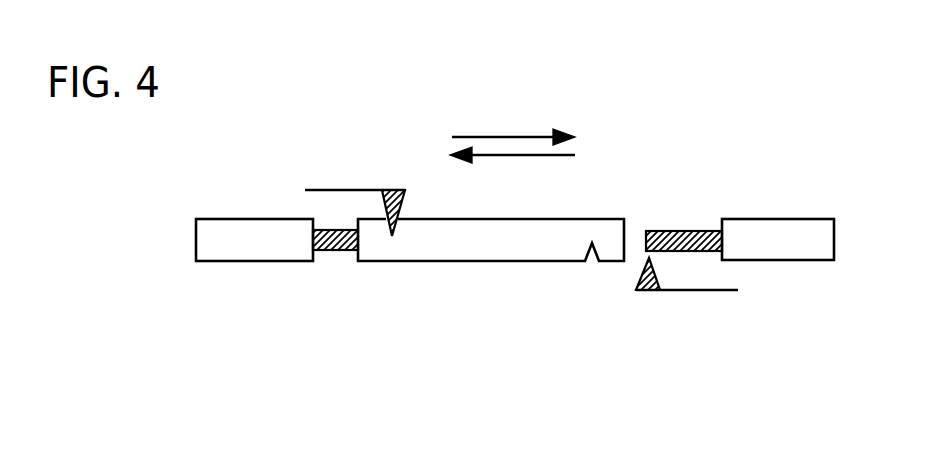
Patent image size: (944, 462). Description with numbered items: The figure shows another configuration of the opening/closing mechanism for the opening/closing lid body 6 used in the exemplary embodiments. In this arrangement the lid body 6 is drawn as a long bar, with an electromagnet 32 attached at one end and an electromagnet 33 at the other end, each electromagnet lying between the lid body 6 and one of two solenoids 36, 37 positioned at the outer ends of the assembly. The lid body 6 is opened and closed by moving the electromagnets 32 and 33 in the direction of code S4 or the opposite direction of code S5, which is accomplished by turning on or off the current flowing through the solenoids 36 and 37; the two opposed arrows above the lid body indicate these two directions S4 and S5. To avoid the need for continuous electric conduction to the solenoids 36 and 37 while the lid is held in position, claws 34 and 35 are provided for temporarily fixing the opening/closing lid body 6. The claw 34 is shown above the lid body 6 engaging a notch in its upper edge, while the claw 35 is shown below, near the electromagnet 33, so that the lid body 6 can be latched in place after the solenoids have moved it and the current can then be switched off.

The opening/closing lid body 6 is at (465, 250).
The electromagnet 32 is at (330, 251).
The electromagnet 33 is at (686, 231).
The claw 34 is at (348, 190).
The claw 35 is at (695, 291).
The solenoid 36 is at (256, 250).
The solenoid 37 is at (788, 248).
The direction code S4 is at (473, 137).
The direction code S5 is at (563, 152).